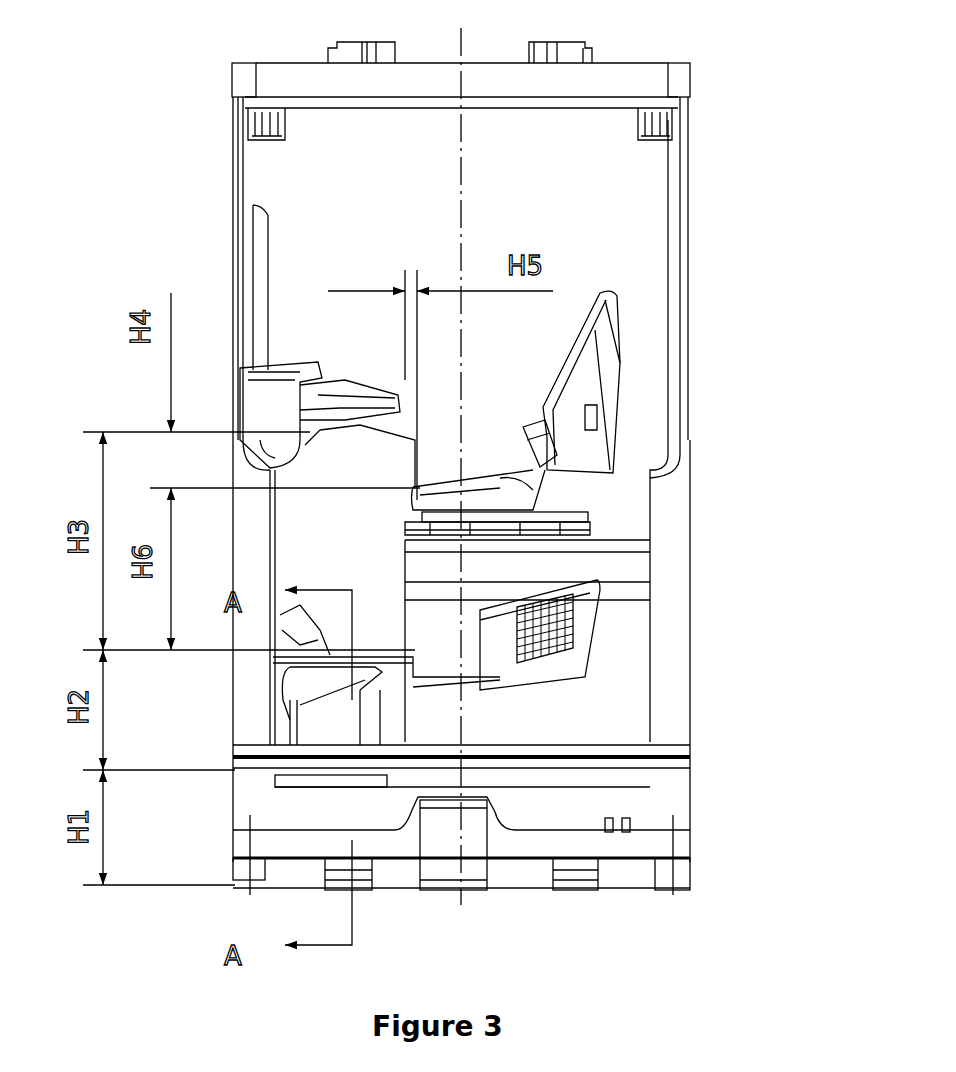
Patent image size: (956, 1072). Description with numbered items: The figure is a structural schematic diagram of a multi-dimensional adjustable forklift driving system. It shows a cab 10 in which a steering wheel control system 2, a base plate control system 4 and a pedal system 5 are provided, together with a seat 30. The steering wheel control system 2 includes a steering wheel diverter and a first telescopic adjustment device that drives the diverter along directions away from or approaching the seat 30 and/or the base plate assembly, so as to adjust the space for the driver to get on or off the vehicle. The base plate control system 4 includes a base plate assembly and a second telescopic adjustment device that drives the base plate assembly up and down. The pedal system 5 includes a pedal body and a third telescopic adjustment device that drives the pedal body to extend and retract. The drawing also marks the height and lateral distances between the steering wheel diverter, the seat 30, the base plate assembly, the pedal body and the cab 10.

The cab 10 is at (282, 79).
The steering wheel control system 2 is at (292, 372).
The seat 30 is at (600, 437).
The base plate control system 4 is at (357, 663).
The pedal system 5 is at (330, 776).